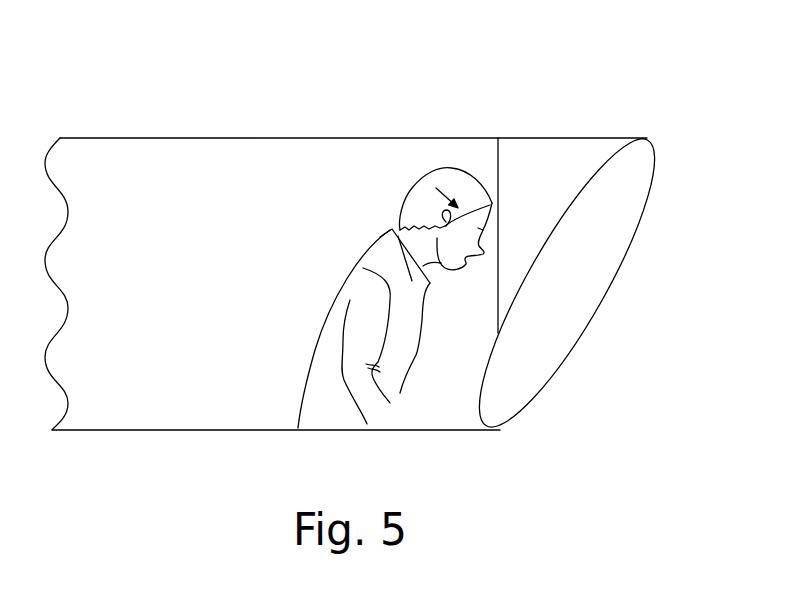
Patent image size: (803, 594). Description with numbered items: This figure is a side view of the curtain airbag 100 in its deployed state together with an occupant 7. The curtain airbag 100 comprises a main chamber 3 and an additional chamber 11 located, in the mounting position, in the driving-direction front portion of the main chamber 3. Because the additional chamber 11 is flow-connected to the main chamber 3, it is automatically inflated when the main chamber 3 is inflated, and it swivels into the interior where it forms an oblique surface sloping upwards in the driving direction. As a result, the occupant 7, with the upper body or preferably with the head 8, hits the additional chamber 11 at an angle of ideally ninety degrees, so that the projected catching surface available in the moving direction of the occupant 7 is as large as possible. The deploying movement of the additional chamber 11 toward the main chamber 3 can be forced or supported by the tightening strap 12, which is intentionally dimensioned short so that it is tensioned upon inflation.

The curtain airbag 100 is at (212, 126).
The main chamber 3 is at (312, 176).
The head 8 is at (478, 180).
The tightening strap 12 is at (499, 165).
The additional chamber 11 is at (622, 215).
The occupant 7 is at (402, 352).